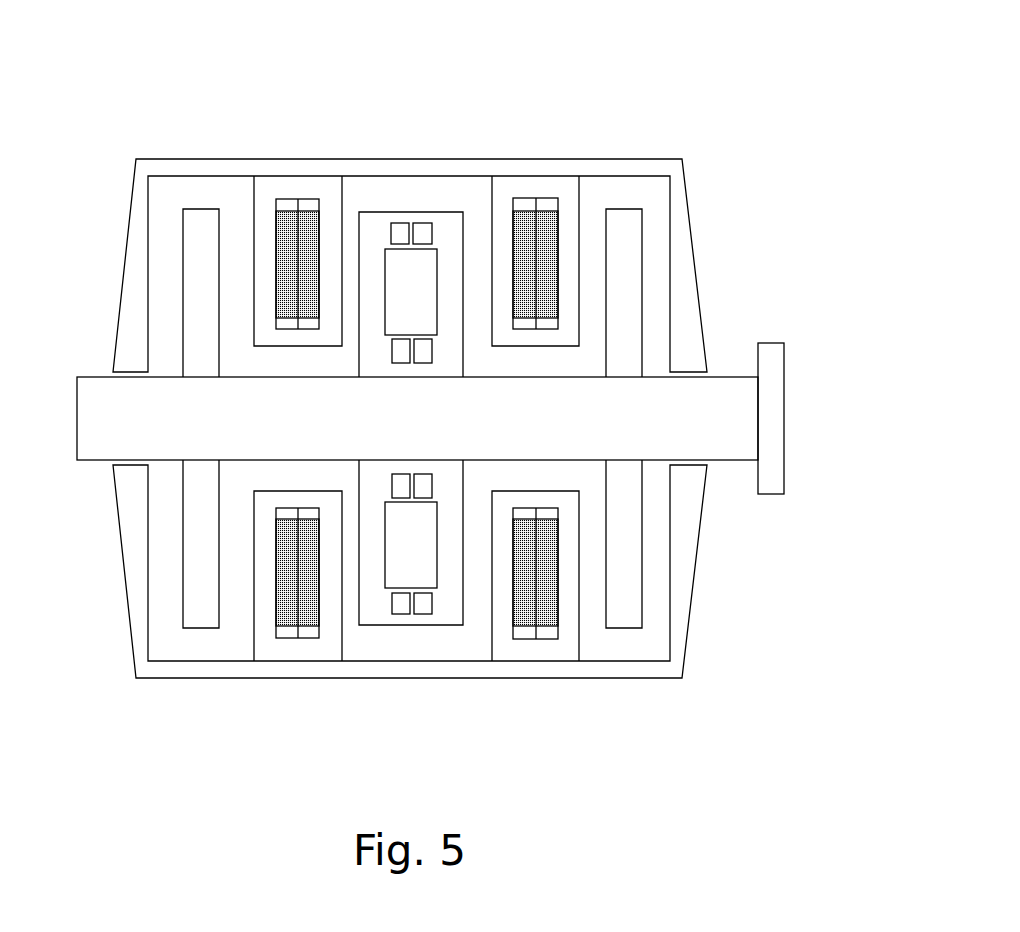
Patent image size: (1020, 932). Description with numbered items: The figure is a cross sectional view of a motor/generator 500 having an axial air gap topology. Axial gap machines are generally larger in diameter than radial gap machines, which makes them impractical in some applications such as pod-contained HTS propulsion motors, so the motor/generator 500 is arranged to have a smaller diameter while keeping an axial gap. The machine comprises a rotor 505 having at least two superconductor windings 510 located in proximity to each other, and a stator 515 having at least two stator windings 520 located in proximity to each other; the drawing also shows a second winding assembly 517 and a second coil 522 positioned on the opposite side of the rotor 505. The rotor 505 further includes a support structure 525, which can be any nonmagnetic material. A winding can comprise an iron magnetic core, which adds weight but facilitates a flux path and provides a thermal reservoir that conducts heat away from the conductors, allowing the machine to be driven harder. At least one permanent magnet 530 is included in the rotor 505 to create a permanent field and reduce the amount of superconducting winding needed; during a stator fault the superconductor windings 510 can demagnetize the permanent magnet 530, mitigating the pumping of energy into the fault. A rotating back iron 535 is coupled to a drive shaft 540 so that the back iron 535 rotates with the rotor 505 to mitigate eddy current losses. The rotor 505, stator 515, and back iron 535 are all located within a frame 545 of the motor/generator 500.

The motor/generator 500 is at (578, 53).
The rotor 505 is at (408, 188).
The superconductor windings 510 is at (400, 609).
The stator 515 is at (309, 163).
The second winding assembly 517 is at (540, 164).
The stator windings 520 is at (289, 634).
The second coil 522 is at (552, 628).
The support structure 525 is at (375, 614).
The permanent magnet 530 is at (429, 575).
The back iron 535 is at (193, 311).
The drive shaft 540 is at (777, 412).
The frame 545 is at (688, 282).